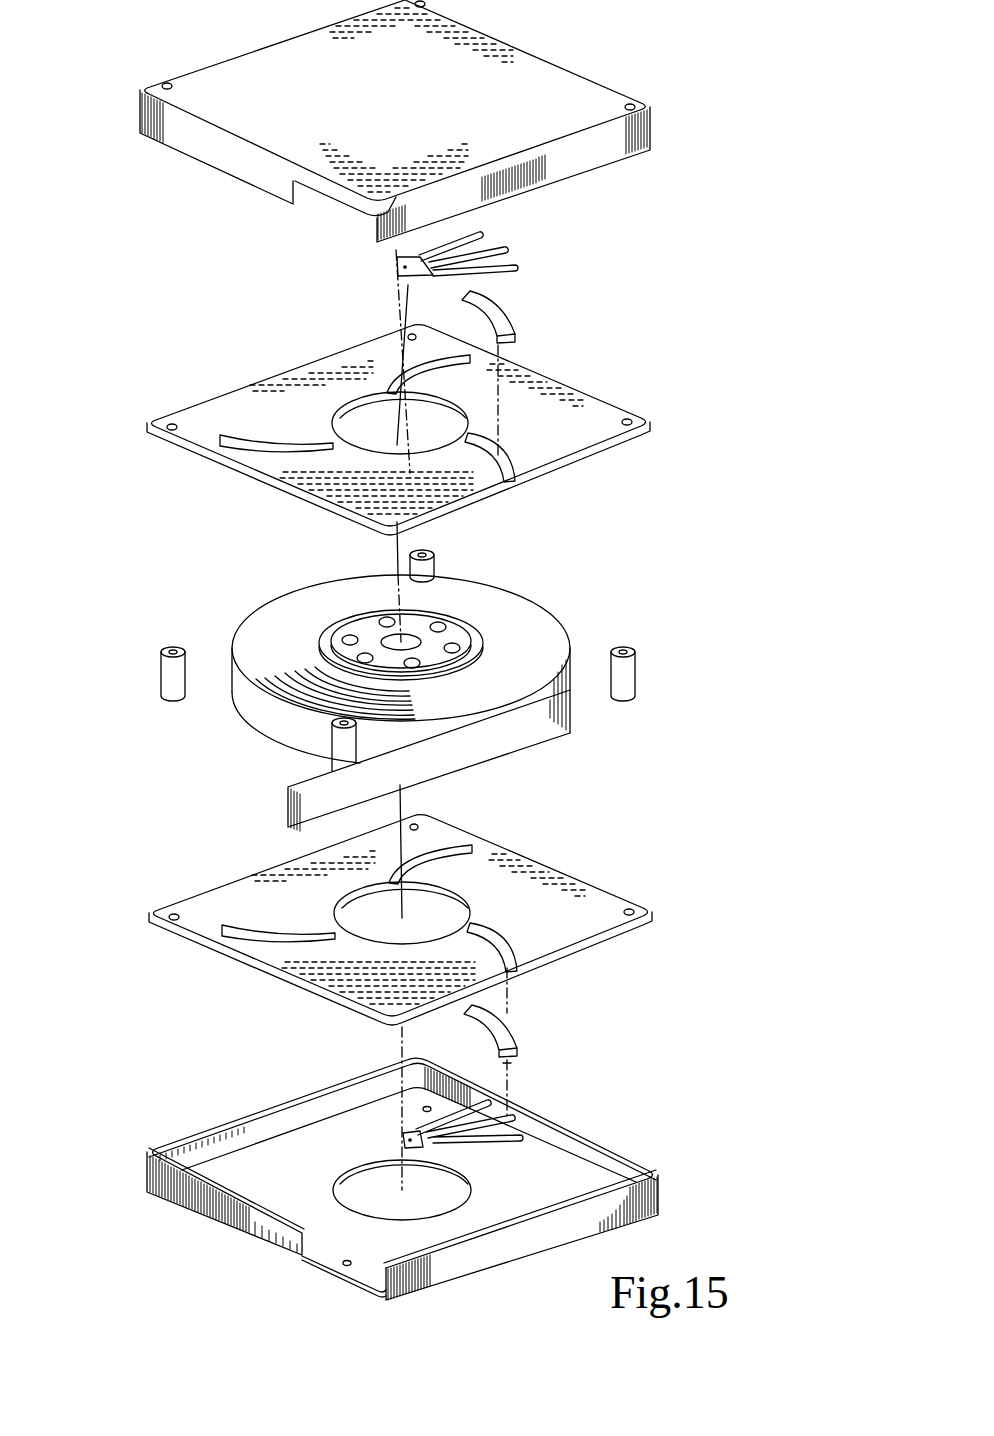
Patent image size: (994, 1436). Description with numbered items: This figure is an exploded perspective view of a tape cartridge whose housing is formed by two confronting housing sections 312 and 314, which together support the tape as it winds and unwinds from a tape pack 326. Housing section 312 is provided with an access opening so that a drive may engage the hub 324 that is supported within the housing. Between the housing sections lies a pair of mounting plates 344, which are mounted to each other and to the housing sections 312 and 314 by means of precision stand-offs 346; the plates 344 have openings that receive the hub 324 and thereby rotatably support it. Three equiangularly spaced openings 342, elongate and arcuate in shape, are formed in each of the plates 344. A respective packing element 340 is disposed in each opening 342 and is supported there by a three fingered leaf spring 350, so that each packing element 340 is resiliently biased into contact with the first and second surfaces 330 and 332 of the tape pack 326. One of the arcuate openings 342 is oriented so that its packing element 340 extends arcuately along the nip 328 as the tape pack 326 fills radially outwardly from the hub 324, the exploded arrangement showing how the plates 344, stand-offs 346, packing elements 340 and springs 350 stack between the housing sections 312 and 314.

The housing section 312 is at (572, 1183).
The housing section 314 is at (533, 88).
The hub 324 is at (363, 630).
The tape pack 326 is at (498, 613).
The nip 328 is at (512, 684).
The first surface 330 is at (253, 732).
The second surface 332 is at (263, 632).
The packing element 340 is at (512, 327).
The opening 342 is at (383, 372).
The mounting plate 344 is at (586, 410).
The precision stand-off 346 is at (436, 565).
The three fingered leaf spring 350 is at (522, 236).